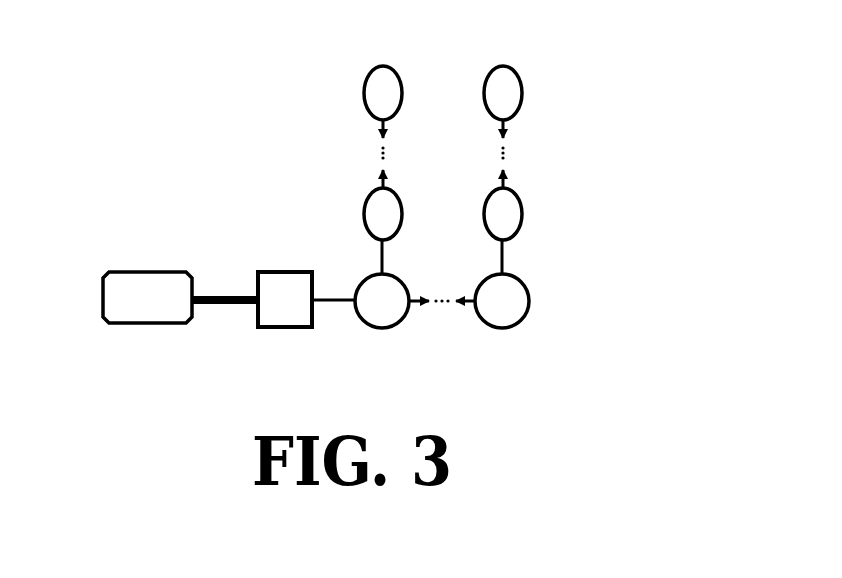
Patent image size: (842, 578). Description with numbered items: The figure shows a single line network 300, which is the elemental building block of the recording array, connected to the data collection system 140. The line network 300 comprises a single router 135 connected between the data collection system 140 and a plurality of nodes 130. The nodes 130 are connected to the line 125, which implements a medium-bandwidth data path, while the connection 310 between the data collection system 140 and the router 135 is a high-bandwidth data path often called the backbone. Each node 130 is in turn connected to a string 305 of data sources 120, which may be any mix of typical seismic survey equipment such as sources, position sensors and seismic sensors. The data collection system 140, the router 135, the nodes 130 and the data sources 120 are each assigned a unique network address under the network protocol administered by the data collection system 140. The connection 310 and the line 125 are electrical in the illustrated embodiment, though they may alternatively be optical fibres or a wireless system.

The line network 300 is at (188, 123).
The string 305 is at (400, 37).
The data sources 120 is at (365, 90).
The line 125 is at (335, 295).
The nodes 130 is at (388, 328).
The router 135 is at (293, 328).
The data collection system 140 is at (155, 326).
The connection 310 is at (237, 293).